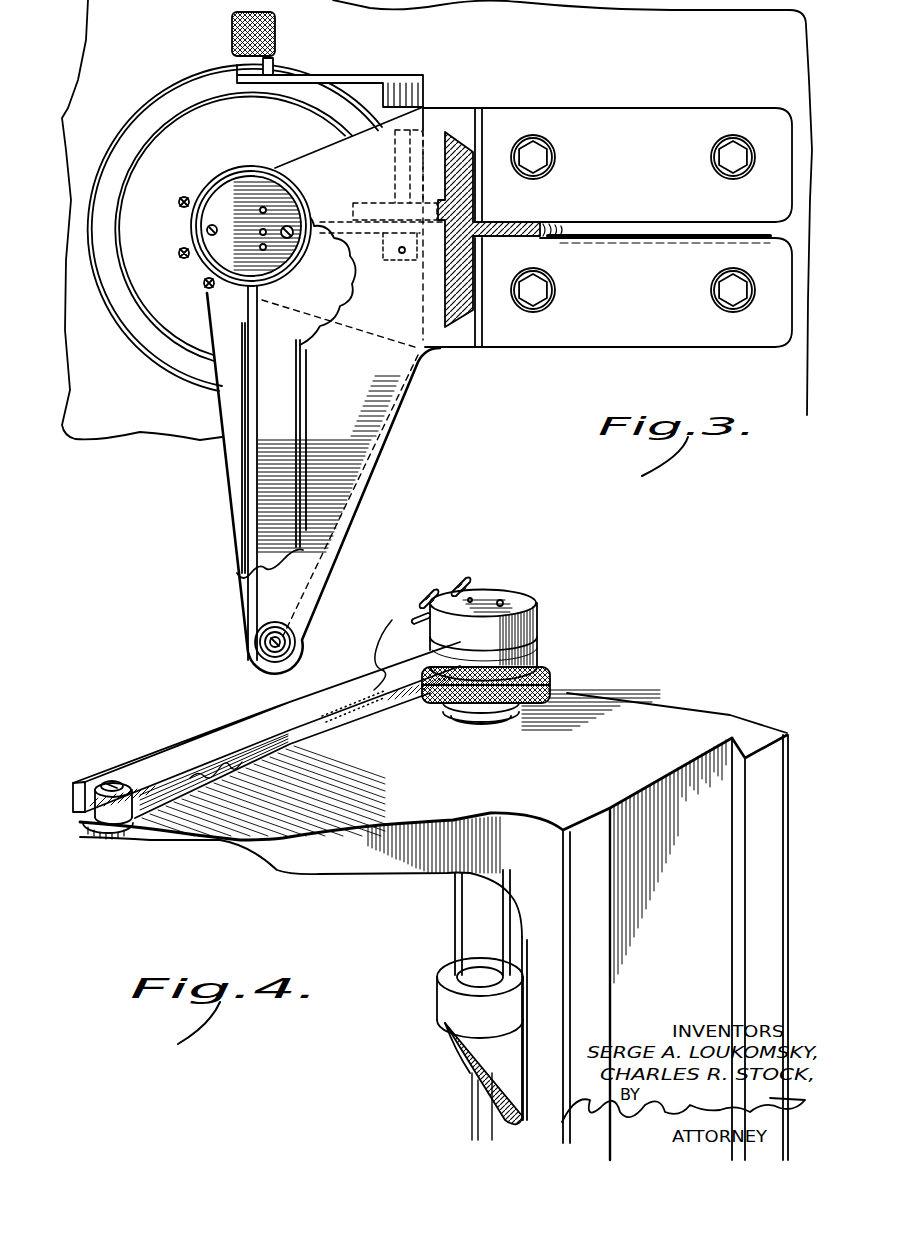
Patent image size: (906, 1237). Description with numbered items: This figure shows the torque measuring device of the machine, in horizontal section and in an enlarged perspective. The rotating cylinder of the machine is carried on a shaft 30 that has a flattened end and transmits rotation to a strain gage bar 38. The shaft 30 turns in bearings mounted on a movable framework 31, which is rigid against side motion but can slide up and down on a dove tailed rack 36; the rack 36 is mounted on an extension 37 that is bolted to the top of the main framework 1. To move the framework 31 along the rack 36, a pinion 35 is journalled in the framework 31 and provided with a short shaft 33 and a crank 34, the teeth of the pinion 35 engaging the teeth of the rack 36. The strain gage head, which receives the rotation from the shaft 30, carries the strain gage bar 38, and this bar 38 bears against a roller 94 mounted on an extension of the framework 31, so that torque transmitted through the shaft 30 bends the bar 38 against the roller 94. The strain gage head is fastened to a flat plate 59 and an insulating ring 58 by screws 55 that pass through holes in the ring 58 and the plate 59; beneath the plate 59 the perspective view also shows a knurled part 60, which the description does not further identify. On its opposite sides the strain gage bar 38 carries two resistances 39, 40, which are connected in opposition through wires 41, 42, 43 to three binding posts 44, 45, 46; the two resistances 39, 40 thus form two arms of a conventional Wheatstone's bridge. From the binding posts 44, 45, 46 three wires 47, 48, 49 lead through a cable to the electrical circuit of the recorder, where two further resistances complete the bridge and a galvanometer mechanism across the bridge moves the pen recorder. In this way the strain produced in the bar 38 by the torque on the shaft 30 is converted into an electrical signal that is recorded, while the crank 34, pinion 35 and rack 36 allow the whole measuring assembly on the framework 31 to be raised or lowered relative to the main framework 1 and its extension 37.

In FIG. 3, the main framework 1 is at (623, 56).
In FIG. 4, the shaft 30 is at (470, 1099).
In FIG. 3, the movable framework 31 is at (371, 471).
In FIG. 3, the short shaft 33 is at (395, 168).
In FIG. 3, the crank 34 is at (410, 76).
In FIG. 3, the pinion 35 is at (355, 207).
In FIG. 3, the dove tailed rack 36 is at (478, 215).
In FIG. 3, the extension 37 is at (641, 223).
In FIG. 3, the strain gage bar 38 is at (248, 305).
In FIG. 4, the strain gage bar 38 is at (127, 768).
In FIG. 3, the resistance 39 is at (262, 443).
In FIG. 4, the resistance 39 is at (290, 722).
In FIG. 3, the resistance 40 is at (245, 490).
In FIG. 4, the resistance 40 is at (243, 708).
In FIG. 3, the wire 41 is at (235, 227).
In FIG. 3, the wire 42 is at (308, 347).
In FIG. 3, the wire 43 is at (371, 309).
In FIG. 3, the binding post 44 is at (183, 199).
In FIG. 4, the binding post 44 is at (458, 580).
In FIG. 3, the binding post 45 is at (183, 257).
In FIG. 4, the binding post 45 is at (427, 588).
In FIG. 3, the binding post 46 is at (207, 289).
In FIG. 4, the binding post 46 is at (410, 585).
In FIG. 3, the wire 47 is at (187, 205).
In FIG. 3, the wire 48 is at (187, 248).
In FIG. 3, the wire 49 is at (204, 285).
In FIG. 4, the screws 55 is at (502, 606).
In FIG. 3, the insulating ring 58 is at (232, 180).
In FIG. 4, the insulating ring 58 is at (522, 605).
In FIG. 4, the flat plate 59 is at (537, 640).
In FIG. 4, the knurled nut 60 is at (550, 678).
In FIG. 3, the roller 94 is at (290, 645).
In FIG. 4, the roller 94 is at (107, 823).